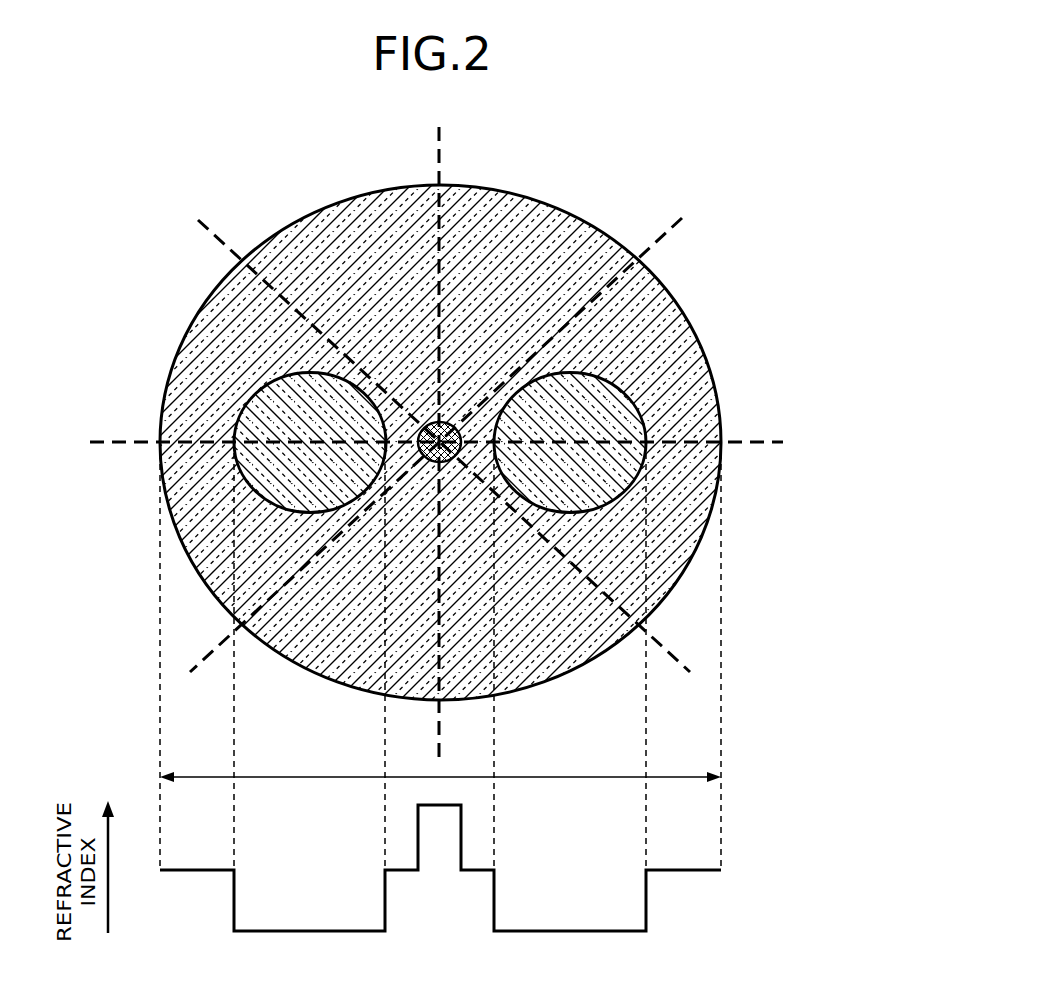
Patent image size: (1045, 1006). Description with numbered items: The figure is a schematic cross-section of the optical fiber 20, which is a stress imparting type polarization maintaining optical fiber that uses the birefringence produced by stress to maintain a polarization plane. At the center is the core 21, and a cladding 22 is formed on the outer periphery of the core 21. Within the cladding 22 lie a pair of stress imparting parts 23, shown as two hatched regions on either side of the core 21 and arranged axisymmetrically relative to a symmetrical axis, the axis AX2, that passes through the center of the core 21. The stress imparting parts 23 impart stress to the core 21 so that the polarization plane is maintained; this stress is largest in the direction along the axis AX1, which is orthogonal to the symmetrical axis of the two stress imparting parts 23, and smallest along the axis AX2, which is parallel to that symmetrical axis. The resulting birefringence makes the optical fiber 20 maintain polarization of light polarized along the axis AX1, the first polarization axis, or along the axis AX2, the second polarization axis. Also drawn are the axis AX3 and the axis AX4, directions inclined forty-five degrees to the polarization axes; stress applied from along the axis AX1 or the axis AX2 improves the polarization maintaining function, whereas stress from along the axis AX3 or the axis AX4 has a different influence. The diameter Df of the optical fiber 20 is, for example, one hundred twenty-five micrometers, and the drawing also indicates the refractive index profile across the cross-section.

The optical fiber 20 is at (480, 399).
The core 21 is at (452, 428).
The cladding 22 is at (672, 392).
The stress imparting parts 23 is at (307, 400).
The axis AX1 is at (737, 444).
The axis AX2 is at (438, 168).
The axis AX3 is at (667, 237).
The axis AX4 is at (222, 237).
The diameter of the optical fiber Df is at (590, 775).